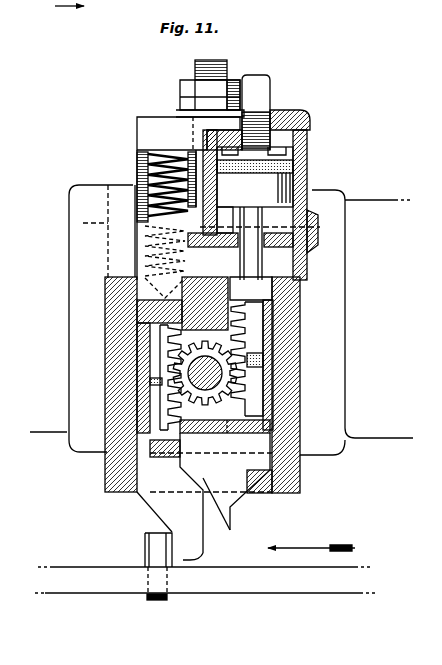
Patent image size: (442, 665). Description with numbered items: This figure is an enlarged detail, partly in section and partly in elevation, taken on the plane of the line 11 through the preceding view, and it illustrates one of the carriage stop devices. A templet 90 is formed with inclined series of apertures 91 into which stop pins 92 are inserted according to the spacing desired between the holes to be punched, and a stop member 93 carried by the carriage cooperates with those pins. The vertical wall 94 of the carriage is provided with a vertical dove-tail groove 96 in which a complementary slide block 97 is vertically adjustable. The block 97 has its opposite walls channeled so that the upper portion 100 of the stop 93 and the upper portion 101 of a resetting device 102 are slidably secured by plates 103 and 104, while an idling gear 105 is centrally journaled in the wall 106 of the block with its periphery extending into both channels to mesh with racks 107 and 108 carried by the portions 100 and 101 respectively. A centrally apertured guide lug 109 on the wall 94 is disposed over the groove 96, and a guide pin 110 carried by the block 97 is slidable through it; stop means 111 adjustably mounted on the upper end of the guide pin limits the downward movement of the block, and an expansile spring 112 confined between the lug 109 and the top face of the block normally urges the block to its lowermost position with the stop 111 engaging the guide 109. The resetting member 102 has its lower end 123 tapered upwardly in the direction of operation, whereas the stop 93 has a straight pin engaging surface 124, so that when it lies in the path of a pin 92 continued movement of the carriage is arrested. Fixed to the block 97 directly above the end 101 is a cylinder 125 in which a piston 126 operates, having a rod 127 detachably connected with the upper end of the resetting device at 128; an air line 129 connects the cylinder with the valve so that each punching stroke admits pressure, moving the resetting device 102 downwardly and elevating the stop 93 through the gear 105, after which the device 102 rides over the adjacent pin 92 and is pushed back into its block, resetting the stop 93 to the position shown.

The section line 11 is at (82, 7).
The templet 90 is at (278, 588).
The apertures 91 is at (167, 590).
The stop pin 92 is at (157, 552).
The stop member 93 is at (192, 543).
The vertical wall 94 is at (83, 207).
The dove-tail groove 96 is at (136, 204).
The slide block 97 is at (140, 249).
The upper portion of stop 100 is at (140, 312).
The upper portion of resetting device 101 is at (267, 320).
The resetting device 102 is at (222, 512).
The plate 103 is at (118, 468).
The plate 104 is at (302, 473).
The idling gear 105 is at (205, 350).
The wall of block 106 is at (140, 330).
The rack 107 is at (168, 412).
The rack 108 is at (252, 393).
The guide lug 109 is at (158, 130).
The guide pin 110 is at (206, 52).
The stop means 111 is at (188, 98).
The expansile spring 112 is at (133, 180).
The lower end of resetting member 123 is at (212, 543).
The pin engaging surface 124 is at (166, 531).
The cylinder 125 is at (305, 147).
The piston 126 is at (270, 185).
The rod 127 is at (273, 222).
The connection 128 is at (268, 278).
The air line 129 is at (272, 86).